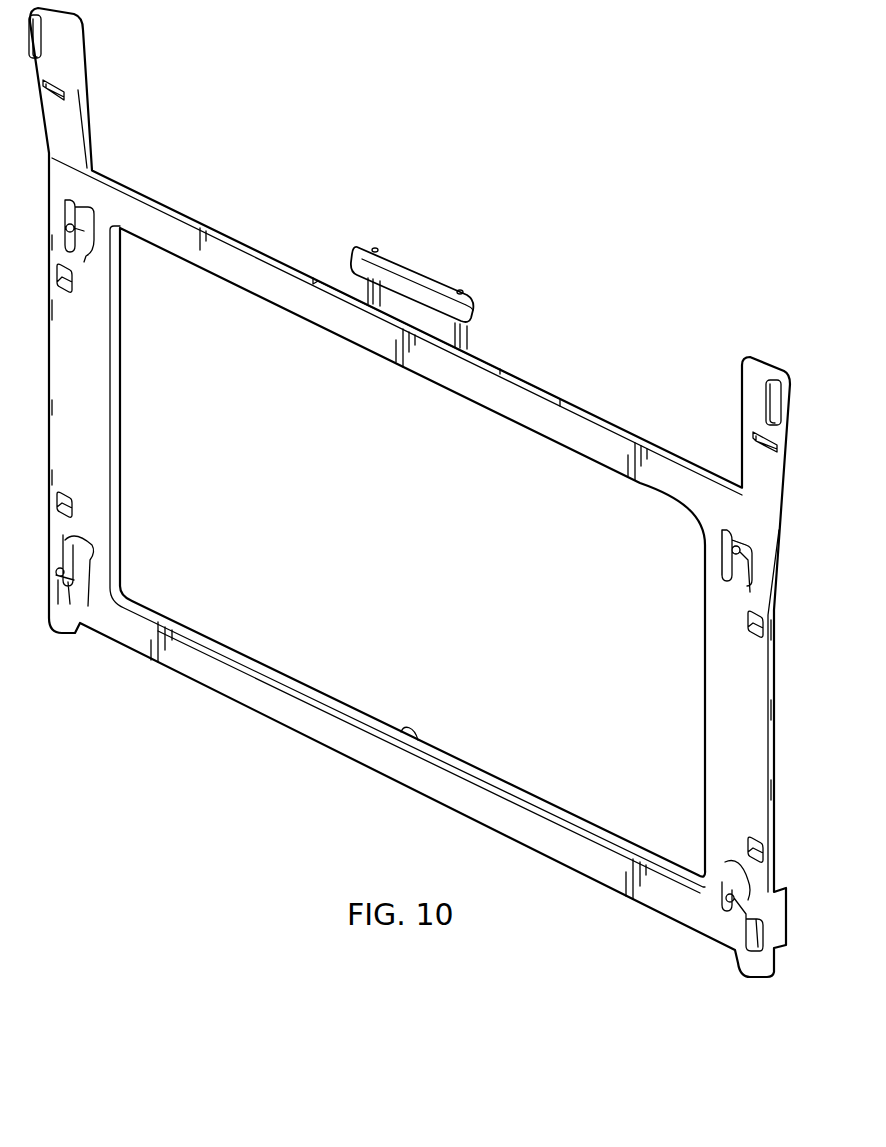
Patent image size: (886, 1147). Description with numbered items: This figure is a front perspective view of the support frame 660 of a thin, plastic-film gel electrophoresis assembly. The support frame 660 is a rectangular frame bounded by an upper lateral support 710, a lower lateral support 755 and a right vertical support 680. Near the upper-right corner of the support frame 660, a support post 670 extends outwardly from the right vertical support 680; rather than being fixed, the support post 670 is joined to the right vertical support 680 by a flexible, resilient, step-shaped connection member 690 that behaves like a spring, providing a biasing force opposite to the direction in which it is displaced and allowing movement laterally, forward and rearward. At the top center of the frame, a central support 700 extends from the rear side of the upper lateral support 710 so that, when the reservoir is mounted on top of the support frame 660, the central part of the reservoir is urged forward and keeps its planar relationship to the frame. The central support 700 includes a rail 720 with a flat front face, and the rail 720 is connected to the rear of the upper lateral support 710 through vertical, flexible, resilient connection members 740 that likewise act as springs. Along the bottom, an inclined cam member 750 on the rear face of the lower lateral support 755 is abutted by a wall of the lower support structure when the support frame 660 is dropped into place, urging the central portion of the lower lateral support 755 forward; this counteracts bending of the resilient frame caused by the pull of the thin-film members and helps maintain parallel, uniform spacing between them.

The support frame 660 is at (769, 354).
The support post 670 is at (727, 548).
The right vertical support 680 is at (724, 712).
The connection member 690 is at (742, 563).
The central support 700 is at (476, 277).
The upper lateral support 710 is at (583, 402).
The rail 720 is at (367, 247).
The connection members 740 is at (470, 335).
The inclined cam member 750 is at (409, 732).
The lower lateral support 755 is at (518, 788).